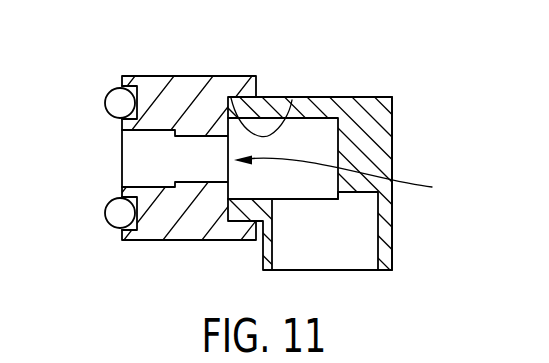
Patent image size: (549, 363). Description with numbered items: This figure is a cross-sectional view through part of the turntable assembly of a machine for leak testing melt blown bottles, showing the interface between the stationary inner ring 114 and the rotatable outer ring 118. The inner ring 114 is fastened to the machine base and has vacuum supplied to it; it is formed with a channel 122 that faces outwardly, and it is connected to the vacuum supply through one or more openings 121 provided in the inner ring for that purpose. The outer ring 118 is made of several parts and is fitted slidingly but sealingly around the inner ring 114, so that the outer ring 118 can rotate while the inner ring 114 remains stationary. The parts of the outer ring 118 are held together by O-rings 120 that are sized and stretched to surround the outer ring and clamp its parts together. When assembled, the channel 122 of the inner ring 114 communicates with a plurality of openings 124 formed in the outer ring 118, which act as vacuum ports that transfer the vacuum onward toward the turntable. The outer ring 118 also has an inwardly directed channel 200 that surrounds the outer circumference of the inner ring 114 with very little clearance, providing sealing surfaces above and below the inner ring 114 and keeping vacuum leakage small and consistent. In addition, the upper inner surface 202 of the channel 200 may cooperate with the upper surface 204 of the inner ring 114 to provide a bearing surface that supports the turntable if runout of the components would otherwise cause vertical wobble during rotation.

The outer ring 118 is at (190, 76).
The O-rings 120 is at (118, 102).
The openings 124 is at (190, 158).
The upper surface 204 is at (366, 97).
The channel 122 is at (308, 135).
The upper inner surface 202 is at (292, 117).
The inner ring 114 is at (370, 150).
The openings 121 is at (355, 257).
The channel 200 is at (353, 179).